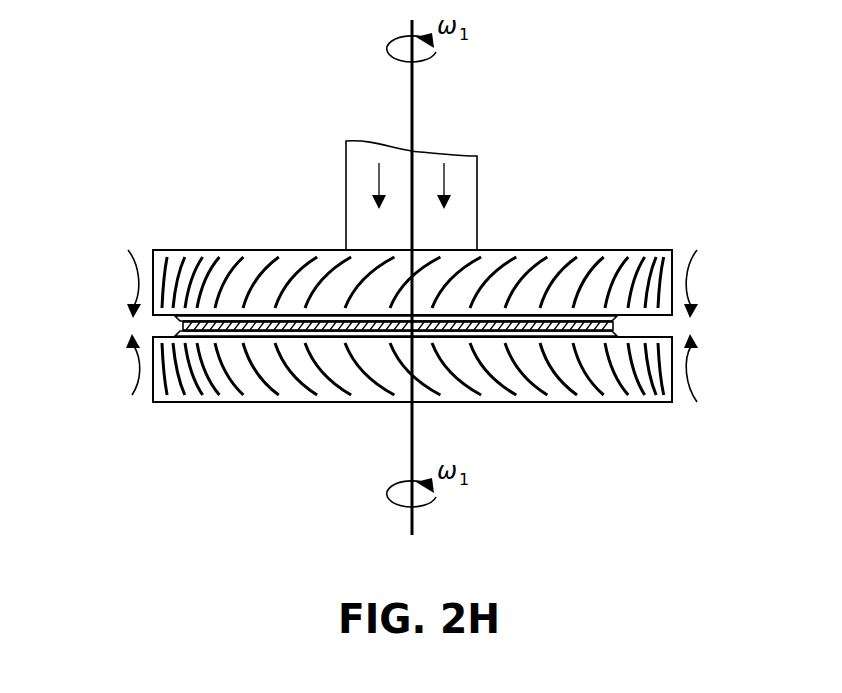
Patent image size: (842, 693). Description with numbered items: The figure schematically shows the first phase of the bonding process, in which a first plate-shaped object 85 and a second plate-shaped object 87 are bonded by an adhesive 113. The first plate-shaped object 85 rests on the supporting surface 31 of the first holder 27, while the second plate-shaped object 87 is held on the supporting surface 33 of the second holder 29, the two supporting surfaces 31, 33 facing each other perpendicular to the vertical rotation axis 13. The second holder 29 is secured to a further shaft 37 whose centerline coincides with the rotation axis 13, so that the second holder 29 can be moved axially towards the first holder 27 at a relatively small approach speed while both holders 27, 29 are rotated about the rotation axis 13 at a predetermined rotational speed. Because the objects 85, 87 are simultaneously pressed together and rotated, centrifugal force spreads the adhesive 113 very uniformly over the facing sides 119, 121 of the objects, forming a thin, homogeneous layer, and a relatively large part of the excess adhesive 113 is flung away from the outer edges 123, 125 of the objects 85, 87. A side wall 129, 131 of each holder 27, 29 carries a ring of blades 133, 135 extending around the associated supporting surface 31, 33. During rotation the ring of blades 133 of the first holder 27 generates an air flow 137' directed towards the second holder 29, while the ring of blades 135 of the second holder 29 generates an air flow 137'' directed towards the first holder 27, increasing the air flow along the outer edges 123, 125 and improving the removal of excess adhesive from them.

The rotation axis 13 is at (415, 108).
The further shaft 37 is at (357, 169).
The second holder 29 is at (676, 262).
The supporting surface 31 is at (645, 402).
The supporting surface 33 is at (591, 292).
The first holder 27 is at (546, 398).
The first plate-shaped object 85 is at (613, 327).
The second plate-shaped object 87 is at (555, 318).
The adhesive 113 is at (272, 317).
The facing side 121 is at (311, 324).
The facing side 119 is at (300, 334).
The outer edge 125 is at (168, 305).
The ring of blades 135 is at (224, 305).
The side wall 131 is at (507, 275).
The outer edge 123 is at (165, 400).
The ring of blades 133 is at (238, 400).
The side wall 129 is at (353, 400).
The air flow 137'' is at (418, 284).
The air flow 137' is at (418, 368).